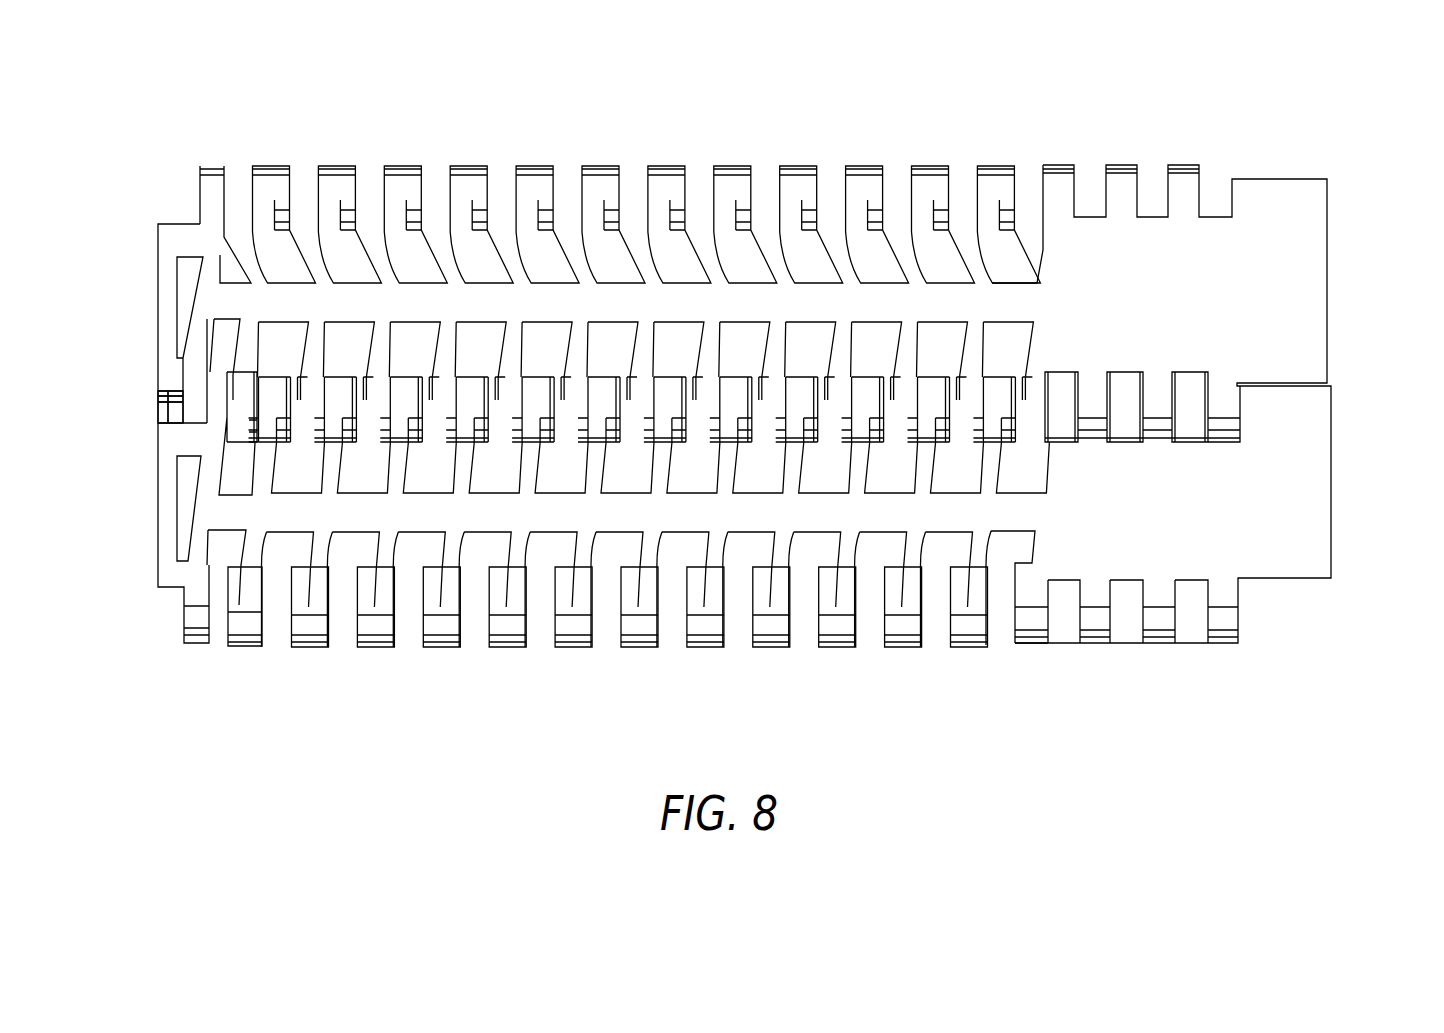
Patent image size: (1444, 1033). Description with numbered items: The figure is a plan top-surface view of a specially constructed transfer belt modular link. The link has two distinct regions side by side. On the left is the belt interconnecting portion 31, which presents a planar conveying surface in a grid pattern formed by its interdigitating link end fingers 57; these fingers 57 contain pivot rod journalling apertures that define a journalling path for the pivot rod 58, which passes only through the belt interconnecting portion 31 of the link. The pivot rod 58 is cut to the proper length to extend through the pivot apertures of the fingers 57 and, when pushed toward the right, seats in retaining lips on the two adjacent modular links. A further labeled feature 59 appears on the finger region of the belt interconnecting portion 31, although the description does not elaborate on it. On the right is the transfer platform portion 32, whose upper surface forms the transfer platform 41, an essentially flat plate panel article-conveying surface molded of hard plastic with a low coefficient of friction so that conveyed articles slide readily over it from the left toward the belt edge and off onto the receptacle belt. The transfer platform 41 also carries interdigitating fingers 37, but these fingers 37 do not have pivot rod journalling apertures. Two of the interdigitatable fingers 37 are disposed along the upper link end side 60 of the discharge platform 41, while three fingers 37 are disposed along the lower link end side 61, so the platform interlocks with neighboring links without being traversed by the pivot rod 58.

The belt interconnecting portion 31 is at (1053, 150).
The transfer platform portion 32 is at (1325, 150).
The pivot rod 58 is at (163, 407).
The contact terminal leg 59 is at (342, 654).
The link end fingers 57 is at (440, 648).
The upper link end side 60 is at (1165, 164).
The interdigitating fingers 37 is at (1098, 645).
The lower link end side 61 is at (1189, 653).
The transfer platform 41 is at (1350, 255).